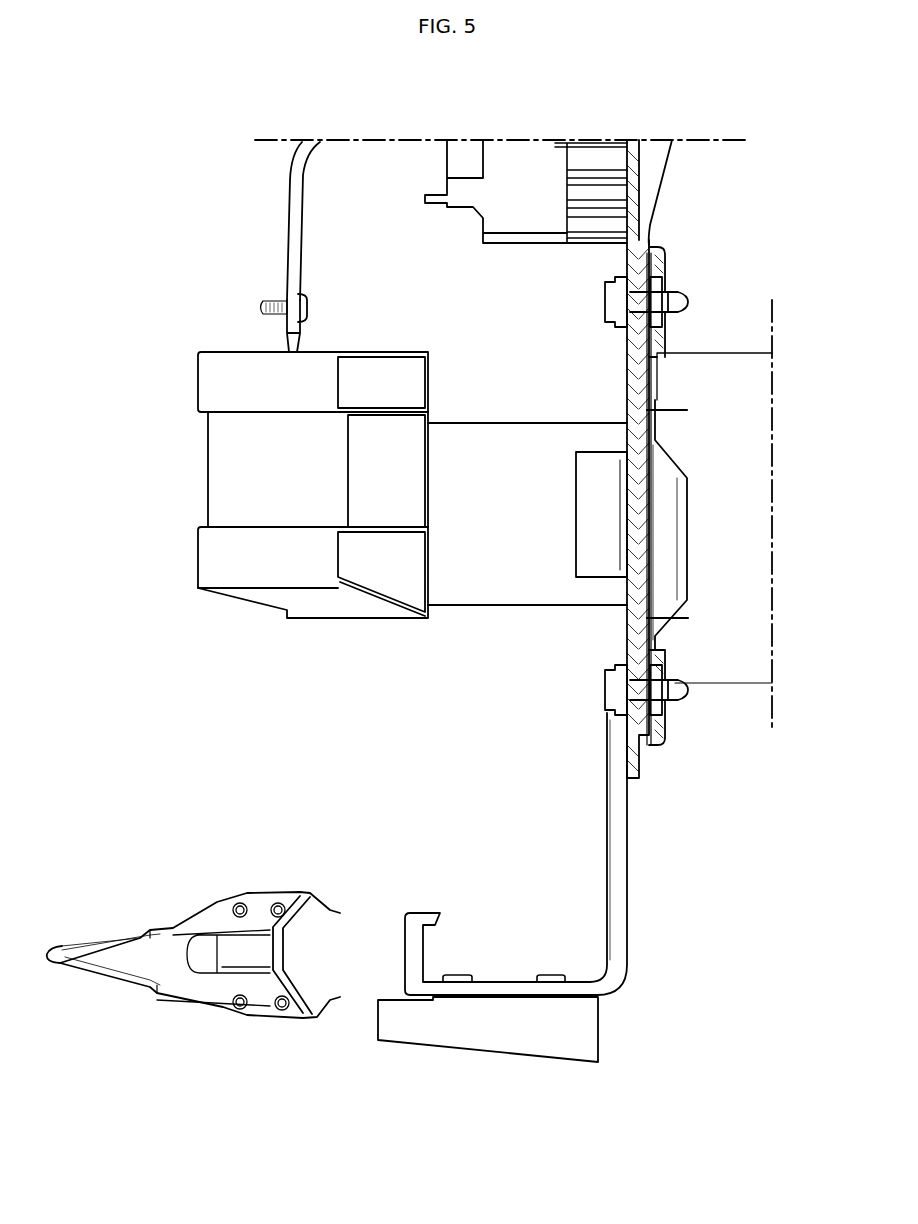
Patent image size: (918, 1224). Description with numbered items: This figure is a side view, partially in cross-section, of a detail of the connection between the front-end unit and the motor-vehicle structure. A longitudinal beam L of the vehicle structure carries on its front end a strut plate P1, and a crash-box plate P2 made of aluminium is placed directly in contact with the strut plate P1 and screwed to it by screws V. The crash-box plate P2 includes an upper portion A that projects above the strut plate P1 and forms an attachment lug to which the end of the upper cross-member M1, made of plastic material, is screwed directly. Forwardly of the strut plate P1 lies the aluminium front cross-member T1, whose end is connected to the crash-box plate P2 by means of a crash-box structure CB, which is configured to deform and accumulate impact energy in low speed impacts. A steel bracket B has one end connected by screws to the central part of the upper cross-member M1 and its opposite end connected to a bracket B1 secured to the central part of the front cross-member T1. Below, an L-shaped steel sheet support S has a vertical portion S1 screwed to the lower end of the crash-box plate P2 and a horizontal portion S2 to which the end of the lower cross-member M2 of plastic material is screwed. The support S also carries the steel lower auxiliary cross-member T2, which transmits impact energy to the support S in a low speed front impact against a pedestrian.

The upper portion A is at (645, 212).
The steel bracket B is at (290, 213).
The bracket B1 is at (295, 342).
The upper cross-member M1 is at (510, 204).
The screws V is at (604, 302).
The longitudinal beam L is at (714, 377).
The crash-box structure CB is at (498, 445).
The front cross-member T1 is at (203, 468).
The crash-box plate P2 is at (618, 618).
The strut plate P1 is at (655, 747).
The side support S is at (573, 854).
The vertical portion S1 is at (607, 830).
The horizontal portion S2 is at (500, 983).
The lower cross-member M2 is at (488, 1047).
The lower auxiliary cross-member T2 is at (92, 932).